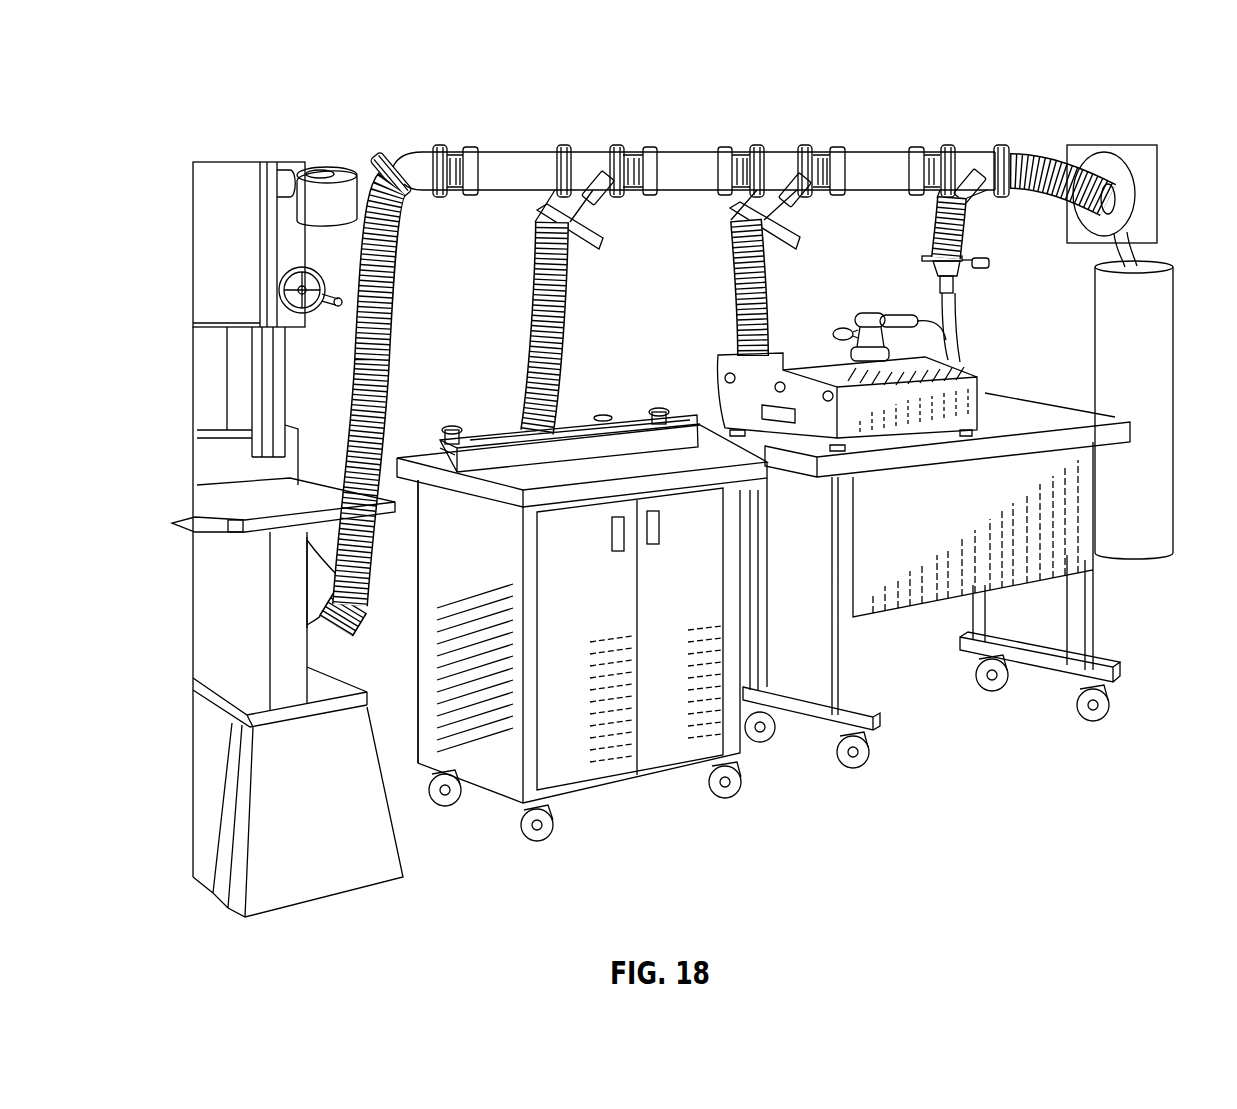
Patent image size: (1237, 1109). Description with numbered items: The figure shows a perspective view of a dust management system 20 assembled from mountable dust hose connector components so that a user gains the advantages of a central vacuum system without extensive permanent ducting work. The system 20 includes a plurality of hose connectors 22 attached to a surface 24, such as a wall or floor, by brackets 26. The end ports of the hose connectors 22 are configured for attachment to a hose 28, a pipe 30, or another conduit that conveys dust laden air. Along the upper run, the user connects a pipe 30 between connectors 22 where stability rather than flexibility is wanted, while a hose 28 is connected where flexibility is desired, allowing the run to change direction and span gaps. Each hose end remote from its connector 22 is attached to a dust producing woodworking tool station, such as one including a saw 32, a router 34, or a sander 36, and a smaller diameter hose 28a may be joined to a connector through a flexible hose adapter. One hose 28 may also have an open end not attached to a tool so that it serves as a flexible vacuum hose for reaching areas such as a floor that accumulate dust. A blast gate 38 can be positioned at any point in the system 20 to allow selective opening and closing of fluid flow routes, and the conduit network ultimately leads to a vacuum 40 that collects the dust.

The system 20 is at (1168, 92).
The hose connector 22 is at (421, 162).
The surface 24 is at (443, 287).
The bracket 26 is at (383, 163).
The hose 28 is at (1026, 168).
The smaller diameter hose 28a is at (958, 316).
The pipe 30 is at (506, 160).
The saw 32 is at (270, 346).
The router 34 is at (574, 466).
The sander 36 is at (872, 352).
The blast gate 38 is at (600, 247).
The vacuum 40 is at (1166, 512).